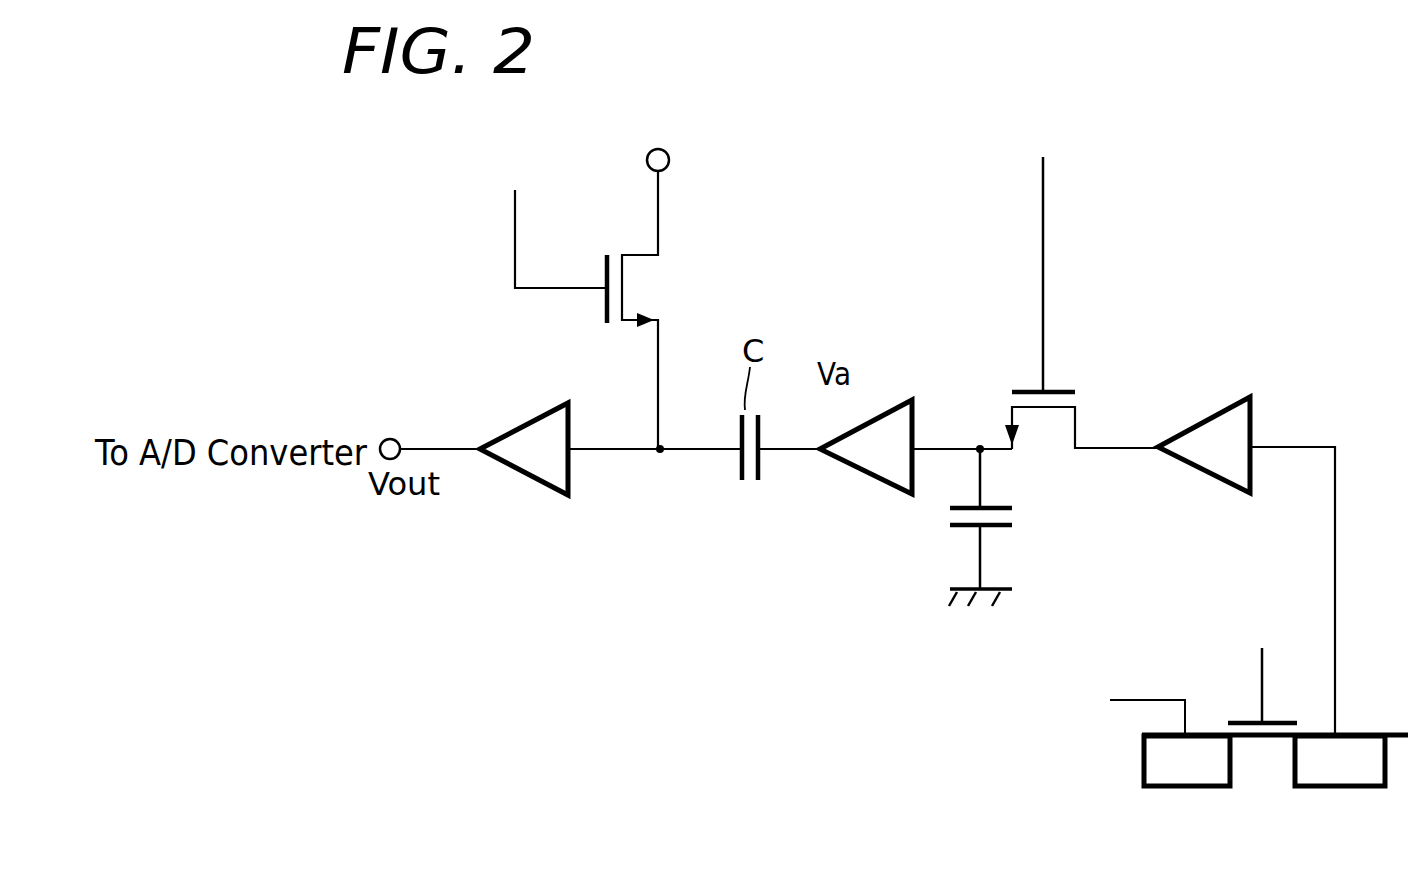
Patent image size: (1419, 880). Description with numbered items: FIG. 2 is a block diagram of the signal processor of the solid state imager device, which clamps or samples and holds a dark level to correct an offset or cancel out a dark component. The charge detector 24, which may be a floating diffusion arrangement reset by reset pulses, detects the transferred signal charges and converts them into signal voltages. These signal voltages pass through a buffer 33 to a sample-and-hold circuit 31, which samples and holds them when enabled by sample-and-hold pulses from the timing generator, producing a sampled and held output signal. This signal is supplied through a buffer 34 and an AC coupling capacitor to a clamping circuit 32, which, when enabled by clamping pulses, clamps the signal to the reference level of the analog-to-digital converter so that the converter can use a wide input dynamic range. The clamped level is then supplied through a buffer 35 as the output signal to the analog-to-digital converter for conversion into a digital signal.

The charge detector 24 is at (1365, 651).
The sample-and-hold circuit 31 is at (1068, 312).
The clamping circuit 32 is at (670, 295).
The buffer 33 is at (1210, 473).
The buffer 34 is at (873, 478).
The buffer 35 is at (527, 476).